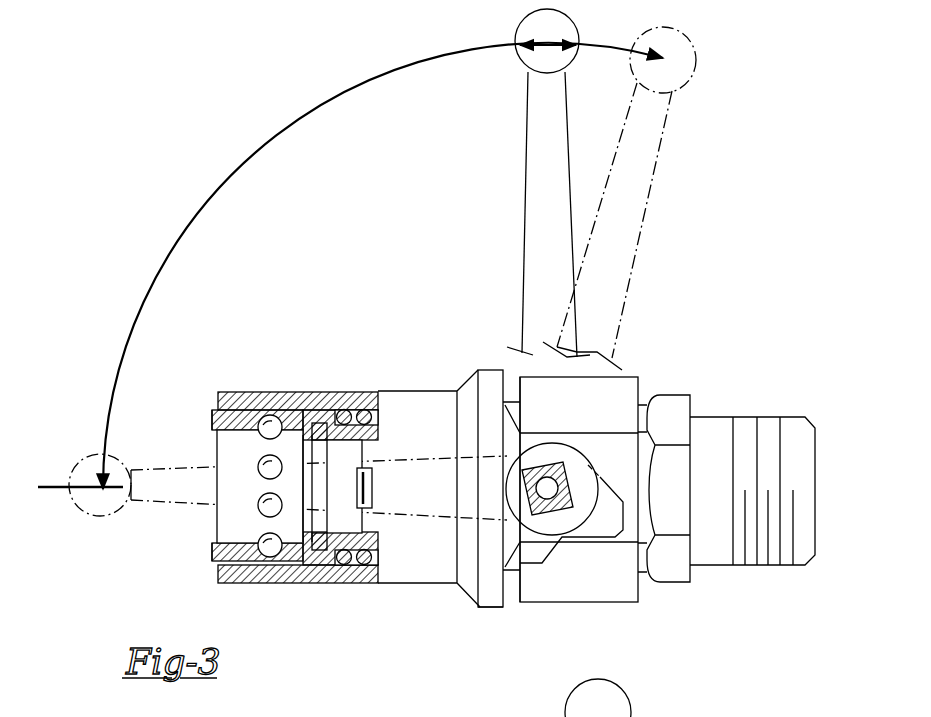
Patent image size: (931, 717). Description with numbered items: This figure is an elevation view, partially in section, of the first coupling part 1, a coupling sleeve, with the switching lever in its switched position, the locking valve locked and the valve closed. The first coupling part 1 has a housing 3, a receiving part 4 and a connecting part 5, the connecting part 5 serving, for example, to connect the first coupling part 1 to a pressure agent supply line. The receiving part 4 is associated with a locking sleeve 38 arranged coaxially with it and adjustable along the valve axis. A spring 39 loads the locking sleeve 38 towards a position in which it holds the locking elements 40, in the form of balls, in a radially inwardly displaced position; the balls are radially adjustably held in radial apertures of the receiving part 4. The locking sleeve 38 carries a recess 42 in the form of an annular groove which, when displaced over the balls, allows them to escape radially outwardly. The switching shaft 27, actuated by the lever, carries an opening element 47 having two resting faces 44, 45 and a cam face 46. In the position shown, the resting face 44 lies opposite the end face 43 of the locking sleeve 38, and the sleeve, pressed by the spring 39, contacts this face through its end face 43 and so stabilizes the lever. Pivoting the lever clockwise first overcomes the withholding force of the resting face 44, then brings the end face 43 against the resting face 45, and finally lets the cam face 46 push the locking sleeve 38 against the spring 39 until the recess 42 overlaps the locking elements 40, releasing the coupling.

The first coupling part 1 is at (627, 393).
The housing 3 is at (621, 583).
The receiving part 4 is at (357, 556).
The connecting part 5 is at (716, 442).
The switching shaft 27 is at (568, 560).
The locking sleeve 38 is at (407, 557).
The spring 39 is at (353, 409).
The locking elements 40 is at (270, 415).
The recess 42 is at (318, 422).
The end face 43 is at (504, 608).
The resting face 44 is at (550, 470).
The resting face 45 is at (487, 555).
The cam face 46 is at (532, 515).
The opening element 47 is at (560, 505).